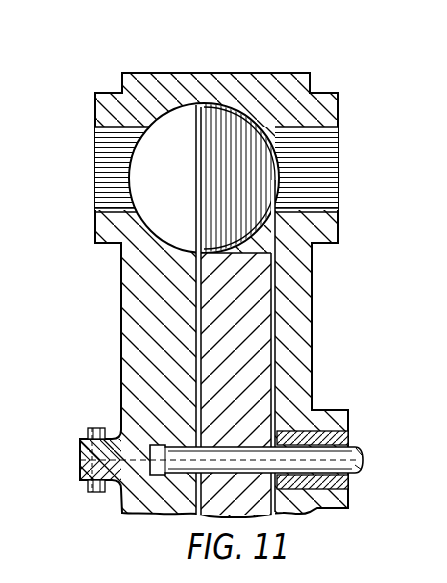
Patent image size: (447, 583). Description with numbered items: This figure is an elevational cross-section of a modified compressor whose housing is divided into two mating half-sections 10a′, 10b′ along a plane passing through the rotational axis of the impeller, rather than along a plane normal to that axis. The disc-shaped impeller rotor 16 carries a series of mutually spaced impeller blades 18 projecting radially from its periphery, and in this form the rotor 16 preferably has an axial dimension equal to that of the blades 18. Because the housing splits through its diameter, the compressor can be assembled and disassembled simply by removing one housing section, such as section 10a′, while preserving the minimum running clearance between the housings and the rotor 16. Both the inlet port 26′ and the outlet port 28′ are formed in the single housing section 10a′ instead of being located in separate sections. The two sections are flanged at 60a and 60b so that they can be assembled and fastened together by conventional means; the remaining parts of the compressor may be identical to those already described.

The housing section 10a′ is at (216, 69).
The housing section 10b′ is at (214, 317).
The disc-shaped rotor 16 is at (255, 340).
The impeller blades 18 is at (238, 196).
The inlet port 26′ is at (125, 169).
The outlet port 28′ is at (337, 169).
The flange 60a is at (80, 450).
The flange 60b is at (80, 468).